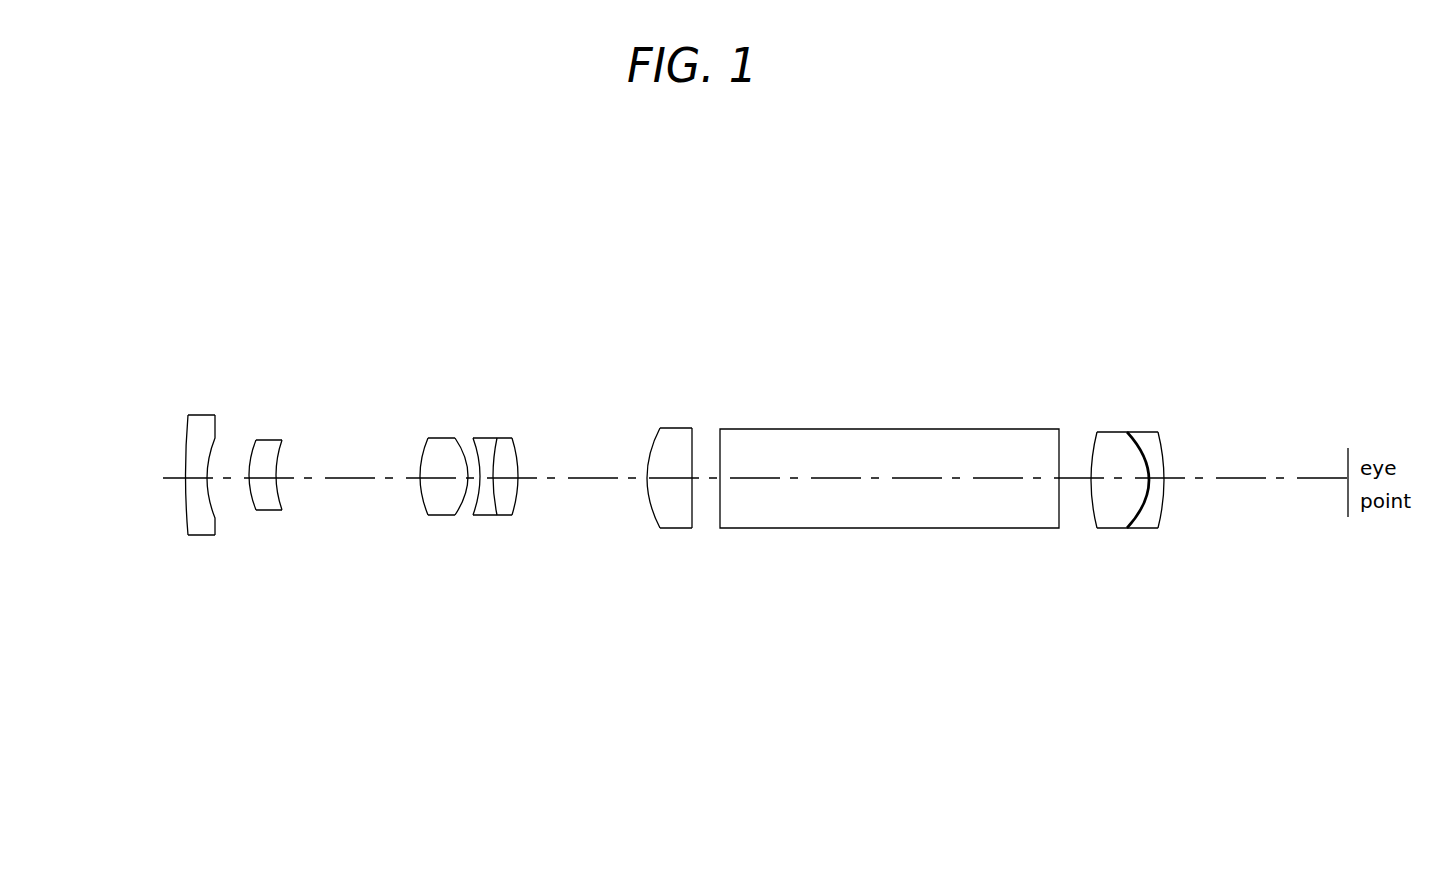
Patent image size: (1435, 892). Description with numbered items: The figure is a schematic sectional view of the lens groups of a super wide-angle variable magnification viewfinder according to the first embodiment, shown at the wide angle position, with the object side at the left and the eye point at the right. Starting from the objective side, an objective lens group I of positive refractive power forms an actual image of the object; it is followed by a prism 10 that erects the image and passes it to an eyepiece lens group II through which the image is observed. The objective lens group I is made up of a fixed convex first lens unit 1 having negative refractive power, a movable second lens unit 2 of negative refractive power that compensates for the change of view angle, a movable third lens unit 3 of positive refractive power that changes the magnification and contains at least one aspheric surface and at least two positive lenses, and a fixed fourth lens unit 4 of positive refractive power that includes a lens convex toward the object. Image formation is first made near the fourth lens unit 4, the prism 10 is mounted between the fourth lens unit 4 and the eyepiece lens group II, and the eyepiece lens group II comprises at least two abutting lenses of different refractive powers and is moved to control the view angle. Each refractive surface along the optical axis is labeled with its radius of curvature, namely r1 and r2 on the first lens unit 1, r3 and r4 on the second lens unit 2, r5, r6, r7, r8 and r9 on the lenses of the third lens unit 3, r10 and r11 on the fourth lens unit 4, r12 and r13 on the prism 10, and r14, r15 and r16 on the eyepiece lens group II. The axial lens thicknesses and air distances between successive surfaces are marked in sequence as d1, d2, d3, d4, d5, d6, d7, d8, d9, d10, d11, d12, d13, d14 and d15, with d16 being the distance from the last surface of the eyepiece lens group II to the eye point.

The objective lens group I is at (245, 303).
The eyepiece lens group II is at (1147, 432).
The first lens unit 1 is at (205, 415).
The second lens unit 2 is at (272, 440).
The third lens unit 3 is at (490, 438).
The fourth lens unit 4 is at (673, 428).
The prism 10 is at (867, 429).
The radius of curvature of refractive surface r1 is at (188, 443).
The radius of curvature of refractive surface r2 is at (215, 450).
The radius of curvature of refractive surface r3 is at (250, 462).
The radius of curvature of refractive surface r4 is at (283, 462).
The radius of curvature of refractive surface r5 is at (421, 462).
The radius of curvature of refractive surface r6 is at (455, 438).
The radius of curvature of refractive surface r7 is at (477, 462).
The radius of curvature of refractive surface r8 is at (497, 465).
The radius of curvature of refractive surface r9 is at (518, 462).
The radius of curvature of refractive surface r10 is at (648, 455).
The radius of curvature of refractive surface r11 is at (692, 450).
The radius of curvature of refractive surface r12 is at (722, 453).
The radius of curvature of refractive surface r13 is at (1059, 455).
The radius of curvature of refractive surface r14 is at (1092, 447).
The radius of curvature of refractive surface r15 is at (1117, 432).
The radius of curvature of refractive surface r16 is at (1165, 452).
The lens thickness or surface distance d1 is at (200, 478).
The lens thickness or surface distance d2 is at (229, 478).
The lens thickness or surface distance d3 is at (262, 478).
The lens thickness or surface distance d4 is at (332, 478).
The lens thickness or surface distance d5 is at (440, 478).
The lens thickness or surface distance d6 is at (472, 478).
The lens thickness or surface distance d7 is at (486, 478).
The lens thickness or surface distance d8 is at (506, 478).
The lens thickness or surface distance d9 is at (584, 478).
The lens thickness or surface distance d10 is at (674, 478).
The lens thickness or surface distance d11 is at (709, 478).
The lens thickness or surface distance d12 is at (876, 478).
The lens thickness or surface distance d13 is at (1077, 478).
The lens thickness or surface distance d14 is at (1123, 478).
The lens thickness or surface distance d15 is at (1157, 478).
The lens thickness or surface distance d16 is at (1264, 478).